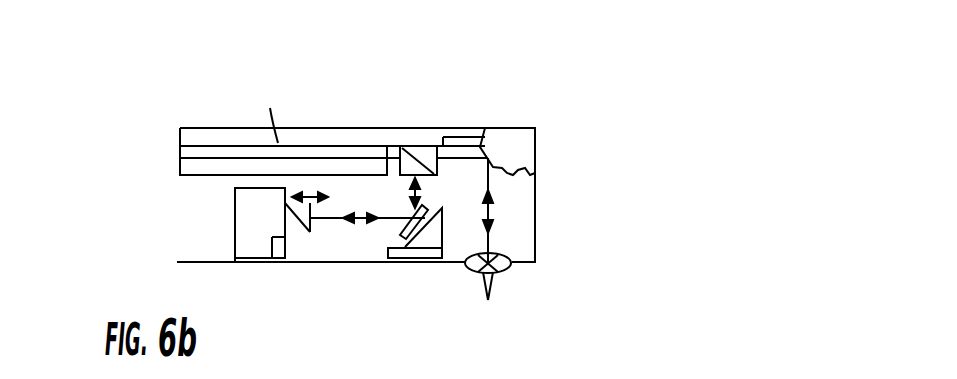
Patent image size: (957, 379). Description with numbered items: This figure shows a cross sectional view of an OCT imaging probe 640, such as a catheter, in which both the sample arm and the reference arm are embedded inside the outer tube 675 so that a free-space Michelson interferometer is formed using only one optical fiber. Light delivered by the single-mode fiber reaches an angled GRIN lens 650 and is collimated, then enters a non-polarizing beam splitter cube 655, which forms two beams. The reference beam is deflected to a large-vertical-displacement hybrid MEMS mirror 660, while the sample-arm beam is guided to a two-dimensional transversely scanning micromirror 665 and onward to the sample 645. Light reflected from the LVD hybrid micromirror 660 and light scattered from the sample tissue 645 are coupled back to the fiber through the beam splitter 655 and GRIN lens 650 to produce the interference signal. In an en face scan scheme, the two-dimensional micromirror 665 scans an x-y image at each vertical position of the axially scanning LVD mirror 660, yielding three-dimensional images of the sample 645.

The OCT imaging probe 640 is at (124, 212).
The graded-index (GRIN) lens 650 is at (192, 138).
The outer tube 675 is at (305, 155).
The beam splitter 655 is at (414, 146).
The 2D transversely scanning micromirror 665 is at (515, 147).
The LVD hybrid MEMS mirror 660 is at (295, 245).
The sample 645 is at (508, 272).